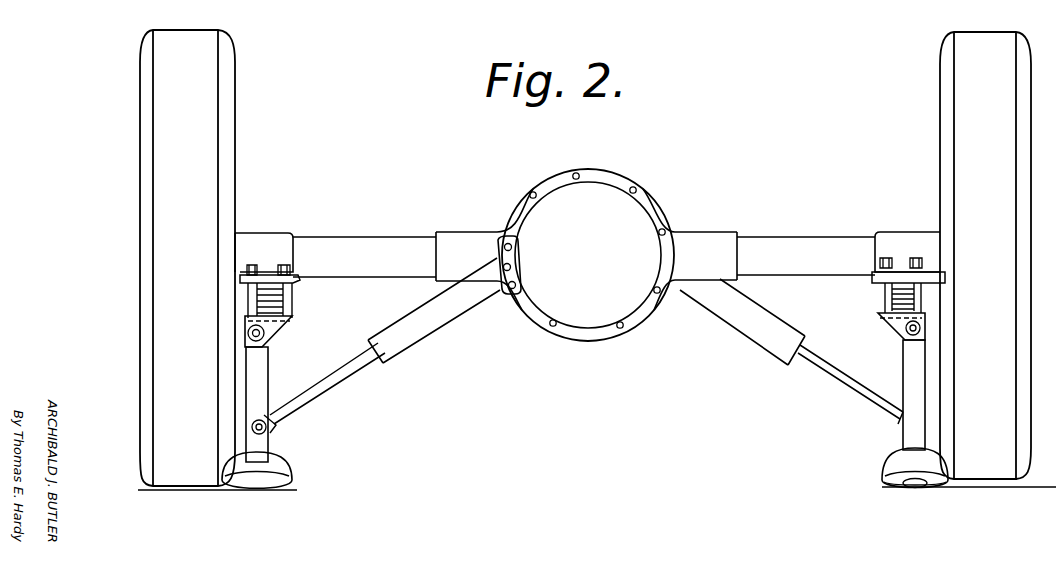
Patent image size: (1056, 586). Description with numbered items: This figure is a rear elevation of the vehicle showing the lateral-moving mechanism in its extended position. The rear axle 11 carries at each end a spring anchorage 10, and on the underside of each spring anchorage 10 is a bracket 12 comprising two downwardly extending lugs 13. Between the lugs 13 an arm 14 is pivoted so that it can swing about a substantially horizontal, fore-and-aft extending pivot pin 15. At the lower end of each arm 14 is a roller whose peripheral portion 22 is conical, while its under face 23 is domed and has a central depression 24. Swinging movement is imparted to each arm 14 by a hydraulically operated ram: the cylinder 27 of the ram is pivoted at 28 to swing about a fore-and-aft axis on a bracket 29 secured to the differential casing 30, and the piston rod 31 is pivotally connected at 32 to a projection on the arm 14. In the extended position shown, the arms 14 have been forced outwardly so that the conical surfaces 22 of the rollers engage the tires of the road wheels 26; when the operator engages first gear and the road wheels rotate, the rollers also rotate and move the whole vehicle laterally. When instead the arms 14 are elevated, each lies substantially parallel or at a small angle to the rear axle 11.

The spring anchorage 10 is at (880, 286).
The rear axle 11 is at (843, 237).
The bracket 12 is at (886, 313).
The lugs 13 is at (925, 324).
The arm 14 is at (255, 369).
The pivot pin 15 is at (920, 329).
The peripheral portion 22 is at (290, 474).
The under face 23 is at (891, 478).
The central depression 24 is at (935, 473).
The wheel 26 is at (237, 177).
The cylinder 27 is at (458, 322).
The pivot 28 is at (520, 269).
The bracket 29 is at (513, 251).
The differential casing 30 is at (593, 341).
The piston rod 31 is at (318, 394).
The pivotal connection 32 is at (268, 412).